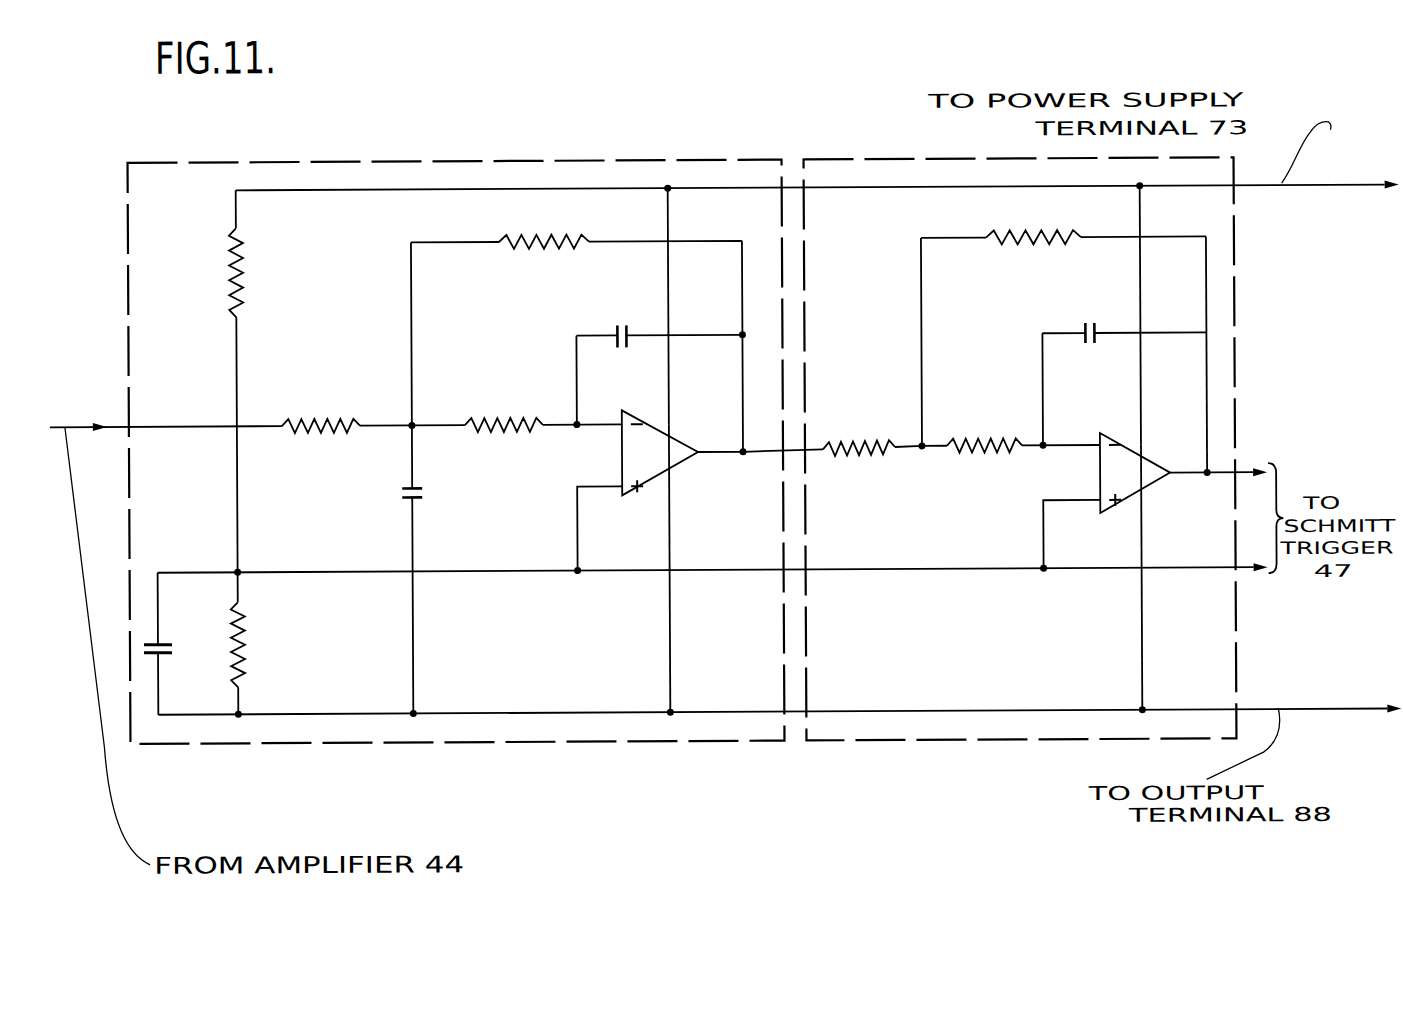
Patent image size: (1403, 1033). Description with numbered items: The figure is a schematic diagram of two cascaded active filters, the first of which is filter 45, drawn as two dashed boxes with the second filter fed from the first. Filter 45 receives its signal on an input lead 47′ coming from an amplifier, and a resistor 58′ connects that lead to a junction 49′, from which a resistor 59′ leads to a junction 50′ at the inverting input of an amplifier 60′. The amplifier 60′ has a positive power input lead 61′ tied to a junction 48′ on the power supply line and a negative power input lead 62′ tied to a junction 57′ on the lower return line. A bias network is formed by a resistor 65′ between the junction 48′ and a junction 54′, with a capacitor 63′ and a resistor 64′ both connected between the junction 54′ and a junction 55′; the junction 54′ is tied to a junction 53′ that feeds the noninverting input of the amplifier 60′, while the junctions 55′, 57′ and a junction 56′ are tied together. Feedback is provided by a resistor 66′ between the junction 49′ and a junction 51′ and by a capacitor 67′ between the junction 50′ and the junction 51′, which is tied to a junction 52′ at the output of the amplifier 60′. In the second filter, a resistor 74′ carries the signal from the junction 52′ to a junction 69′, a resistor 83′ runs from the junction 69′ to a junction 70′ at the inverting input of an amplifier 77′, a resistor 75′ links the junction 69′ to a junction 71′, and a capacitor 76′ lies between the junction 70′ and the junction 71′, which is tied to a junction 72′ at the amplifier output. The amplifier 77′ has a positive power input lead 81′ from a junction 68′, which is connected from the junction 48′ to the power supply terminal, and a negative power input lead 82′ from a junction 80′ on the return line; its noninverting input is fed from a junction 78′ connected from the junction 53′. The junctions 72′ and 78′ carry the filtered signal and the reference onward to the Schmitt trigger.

The filter 45 is at (535, 752).
The input lead 47′ is at (90, 404).
The junction 48′ is at (671, 189).
The junction 49′ is at (411, 427).
The junction 50′ is at (577, 428).
The junction 51′ is at (742, 334).
The junction 52′ is at (742, 455).
The junction 53′ is at (576, 568).
The junction 54′ is at (236, 568).
The junction 55′ is at (240, 712).
The junction 56′ is at (414, 712).
The junction 57′ is at (668, 711).
The resistor 58′ is at (324, 402).
The resistor 59′ is at (490, 424).
The amplifier 60′ is at (647, 492).
The positive power input lead 61′ is at (669, 232).
The negative power input lead 62′ is at (670, 644).
The capacitor 63′ is at (165, 644).
The resistor 64′ is at (244, 645).
The resistor 65′ is at (244, 272).
The resistor 66′ is at (532, 216).
The capacitor 67′ is at (618, 333).
The junction 68′ is at (1143, 189).
The junction 69′ is at (922, 450).
The junction 70′ is at (1043, 450).
The junction 71′ is at (1207, 330).
The junction 72′ is at (1206, 472).
The resistor 74′ is at (868, 444).
The resistor 75′ is at (1014, 238).
The capacitor 76′ is at (1085, 334).
The amplifier 77′ is at (1124, 428).
The junction 78′ is at (1043, 572).
The junction 80′ is at (1140, 710).
The positive power input lead 81′ is at (1140, 278).
The negative power input lead 82′ is at (1143, 612).
The resistor 83′ is at (985, 444).